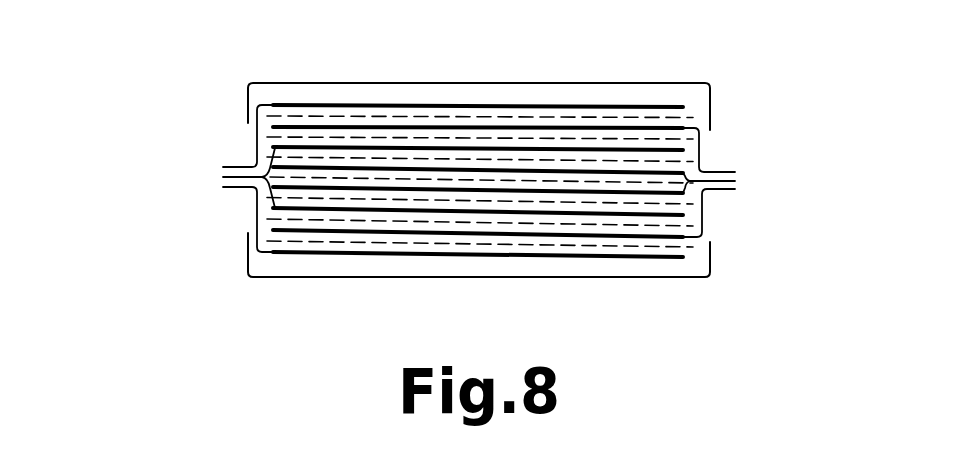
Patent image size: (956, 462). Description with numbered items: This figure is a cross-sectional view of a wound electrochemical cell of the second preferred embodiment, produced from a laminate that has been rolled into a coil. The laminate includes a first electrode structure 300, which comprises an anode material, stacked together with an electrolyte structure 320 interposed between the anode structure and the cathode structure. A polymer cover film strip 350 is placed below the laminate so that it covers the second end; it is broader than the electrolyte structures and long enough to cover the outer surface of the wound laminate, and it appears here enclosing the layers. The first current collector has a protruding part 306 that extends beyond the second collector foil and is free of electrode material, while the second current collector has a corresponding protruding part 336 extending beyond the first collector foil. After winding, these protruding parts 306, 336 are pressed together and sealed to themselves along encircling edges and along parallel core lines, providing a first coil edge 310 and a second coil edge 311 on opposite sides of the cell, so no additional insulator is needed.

The first electrode structure 300 is at (345, 137).
The electrolyte structure 320 is at (621, 162).
The polymer cover film strip 350 is at (480, 76).
The protruding part of first current collector 306 is at (247, 155).
The first coil edge 310 is at (208, 178).
The second coil edge 311 is at (755, 182).
The protruding part of second current collector 336 is at (711, 155).